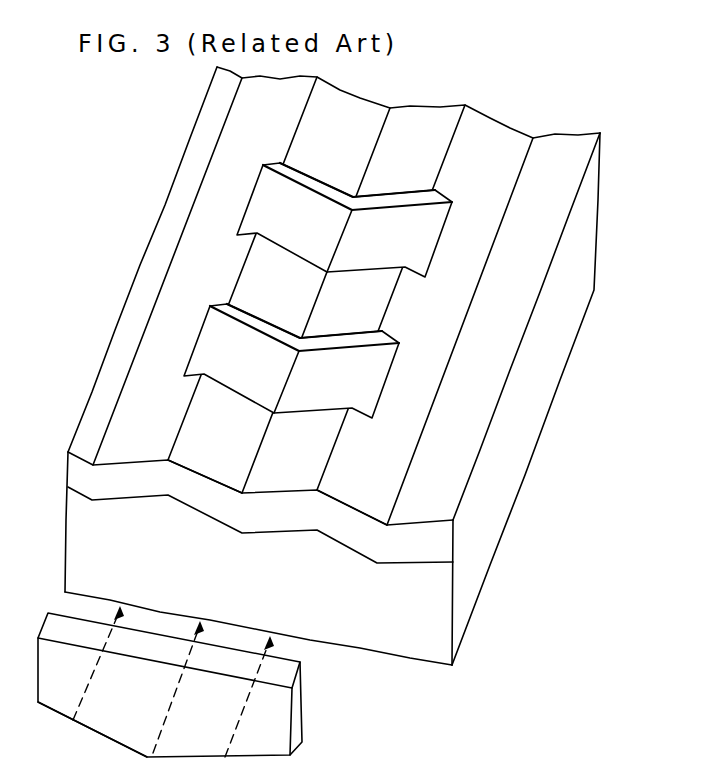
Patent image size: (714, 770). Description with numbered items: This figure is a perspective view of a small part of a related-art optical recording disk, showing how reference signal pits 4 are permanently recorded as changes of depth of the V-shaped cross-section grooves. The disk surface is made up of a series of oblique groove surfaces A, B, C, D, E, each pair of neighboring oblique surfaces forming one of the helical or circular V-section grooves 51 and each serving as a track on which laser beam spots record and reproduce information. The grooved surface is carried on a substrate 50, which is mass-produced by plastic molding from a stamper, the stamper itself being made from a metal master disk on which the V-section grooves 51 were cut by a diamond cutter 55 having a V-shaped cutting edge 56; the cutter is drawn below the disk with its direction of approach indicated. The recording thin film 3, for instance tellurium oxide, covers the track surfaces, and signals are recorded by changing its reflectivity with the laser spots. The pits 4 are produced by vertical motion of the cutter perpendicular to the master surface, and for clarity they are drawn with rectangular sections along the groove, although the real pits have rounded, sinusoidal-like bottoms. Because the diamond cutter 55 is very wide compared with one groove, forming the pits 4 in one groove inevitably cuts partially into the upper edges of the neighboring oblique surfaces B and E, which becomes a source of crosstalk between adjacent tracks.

The recording thin film 3 is at (443, 536).
The pits 4 is at (458, 216).
The substrate 50 is at (77, 522).
The V-section grooves 51 is at (262, 487).
The diamond cutter 55 is at (38, 667).
The V-shaped cutting edge 56 is at (98, 733).
The oblique groove surface A is at (227, 82).
The oblique groove surface B is at (267, 81).
The oblique groove surface C is at (350, 75).
The oblique groove surface D is at (411, 112).
The oblique groove surface E is at (487, 101).